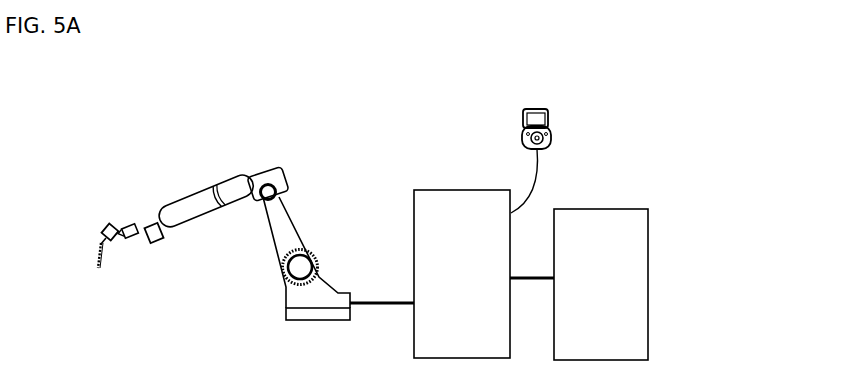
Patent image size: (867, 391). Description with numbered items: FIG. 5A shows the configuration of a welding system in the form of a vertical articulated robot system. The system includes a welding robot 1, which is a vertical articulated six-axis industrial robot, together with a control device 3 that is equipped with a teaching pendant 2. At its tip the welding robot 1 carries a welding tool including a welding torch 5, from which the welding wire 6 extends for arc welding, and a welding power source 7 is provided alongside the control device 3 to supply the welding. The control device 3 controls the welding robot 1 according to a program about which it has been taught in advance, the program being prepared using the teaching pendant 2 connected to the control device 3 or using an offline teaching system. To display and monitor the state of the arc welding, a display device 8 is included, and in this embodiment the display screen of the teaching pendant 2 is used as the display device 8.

The welding robot 1 is at (217, 172).
The teaching pendant 2 is at (550, 122).
The control device 3 is at (480, 189).
The welding torch 5 is at (99, 261).
The welding wire 6 is at (102, 272).
The welding power source 7 is at (620, 208).
The display device 8 is at (535, 110).